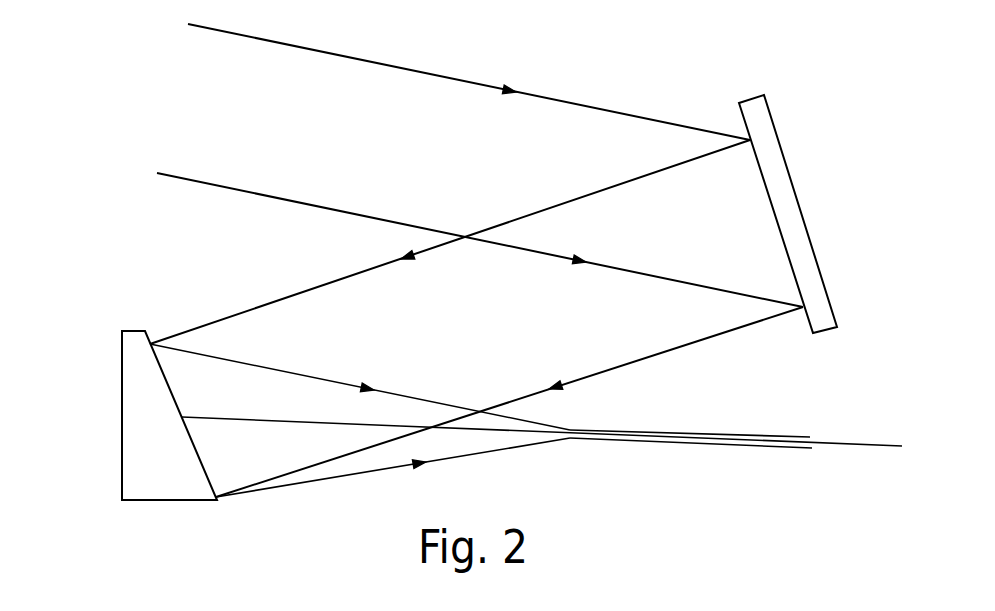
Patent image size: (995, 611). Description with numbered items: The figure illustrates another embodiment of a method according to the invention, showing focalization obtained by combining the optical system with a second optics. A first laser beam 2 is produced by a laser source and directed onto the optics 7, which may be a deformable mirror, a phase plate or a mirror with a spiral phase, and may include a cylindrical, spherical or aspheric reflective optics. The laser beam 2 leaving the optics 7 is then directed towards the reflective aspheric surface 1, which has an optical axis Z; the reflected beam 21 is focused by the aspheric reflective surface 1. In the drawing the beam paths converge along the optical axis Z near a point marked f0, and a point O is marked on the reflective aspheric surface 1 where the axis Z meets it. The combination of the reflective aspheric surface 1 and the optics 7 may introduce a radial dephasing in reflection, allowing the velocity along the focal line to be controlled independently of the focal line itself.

The reflective aspheric surface 1 is at (122, 477).
The first laser beam 2 is at (628, 110).
The reflected beam 21 is at (703, 339).
The optics 7 is at (790, 175).
The origin point O is at (182, 418).
The optical axis Z is at (863, 447).
The focal point f0 is at (481, 420).